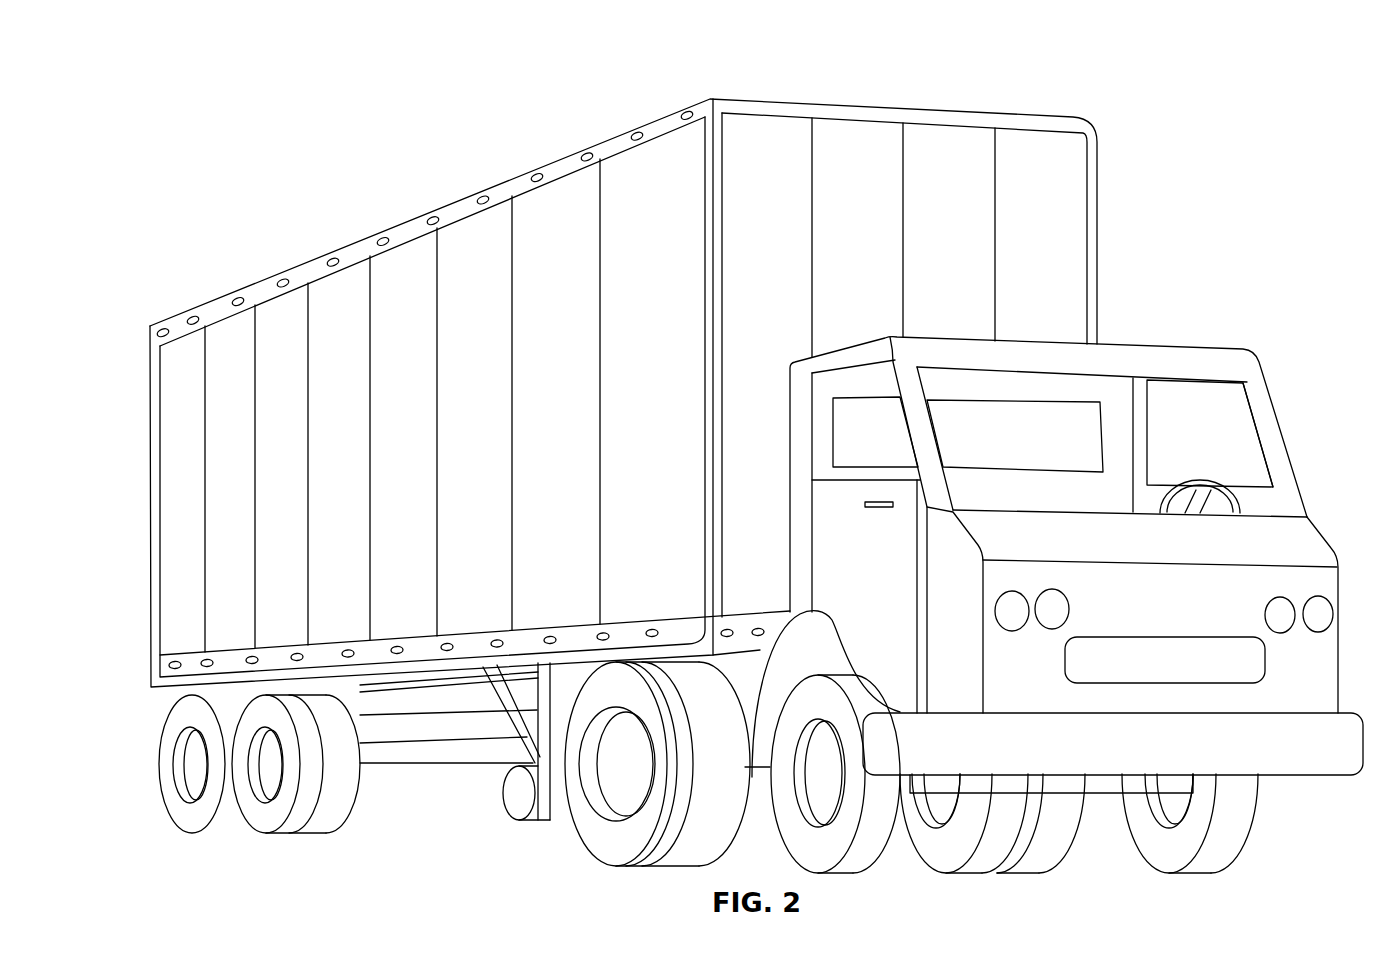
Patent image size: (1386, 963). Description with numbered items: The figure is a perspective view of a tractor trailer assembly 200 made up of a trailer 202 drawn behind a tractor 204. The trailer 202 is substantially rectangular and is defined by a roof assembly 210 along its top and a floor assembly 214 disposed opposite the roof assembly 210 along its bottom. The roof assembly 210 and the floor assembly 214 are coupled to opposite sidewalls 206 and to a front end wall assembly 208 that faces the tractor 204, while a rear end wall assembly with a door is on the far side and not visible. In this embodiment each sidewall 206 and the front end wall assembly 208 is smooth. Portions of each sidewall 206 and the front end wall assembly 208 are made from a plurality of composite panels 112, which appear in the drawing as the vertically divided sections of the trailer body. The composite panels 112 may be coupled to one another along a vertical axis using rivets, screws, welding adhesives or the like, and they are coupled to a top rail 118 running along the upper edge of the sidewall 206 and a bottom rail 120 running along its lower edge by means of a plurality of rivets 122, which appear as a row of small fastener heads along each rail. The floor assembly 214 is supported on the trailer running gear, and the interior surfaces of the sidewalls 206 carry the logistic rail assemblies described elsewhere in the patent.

The tractor trailer assembly 200 is at (170, 117).
The trailer 202 is at (640, 88).
The tractor 204 is at (1252, 325).
The sidewall 206 is at (178, 513).
The front end wall assembly 208 is at (933, 158).
The roof assembly 210 is at (760, 89).
The composite panel 112 is at (490, 233).
The top rail 118 is at (592, 155).
The bottom rail 120 is at (170, 668).
The rivet 122 is at (207, 666).
The floor assembly 214 is at (461, 685).